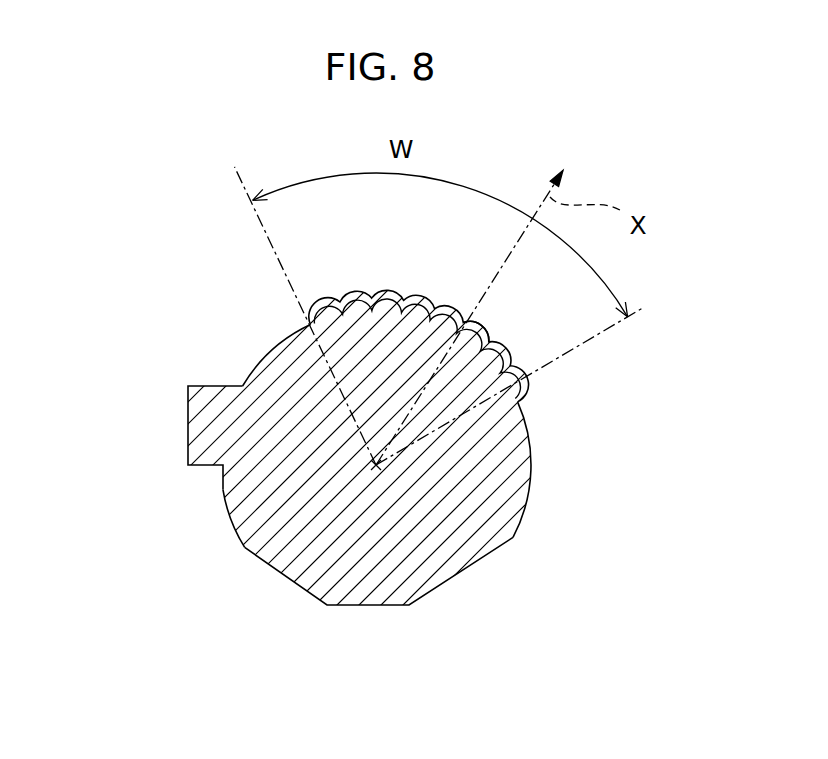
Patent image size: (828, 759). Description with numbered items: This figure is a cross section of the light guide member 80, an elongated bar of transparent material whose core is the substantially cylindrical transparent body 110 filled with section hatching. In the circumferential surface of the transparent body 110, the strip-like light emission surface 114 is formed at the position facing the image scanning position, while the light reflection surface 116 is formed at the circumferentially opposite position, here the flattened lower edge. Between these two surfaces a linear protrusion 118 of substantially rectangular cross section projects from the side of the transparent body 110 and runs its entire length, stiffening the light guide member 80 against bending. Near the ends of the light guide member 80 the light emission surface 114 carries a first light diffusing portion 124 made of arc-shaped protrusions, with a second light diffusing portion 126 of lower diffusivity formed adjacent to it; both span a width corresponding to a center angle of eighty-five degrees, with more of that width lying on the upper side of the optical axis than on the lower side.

The light guide member 80 is at (121, 156).
The transparent body 110 is at (530, 446).
The light emission surface 114 is at (488, 324).
The light reflection surface 116 is at (284, 580).
The linear protrusion 118 is at (218, 400).
The first light diffusing portion 124 is at (353, 289).
The second light diffusing portion 126 is at (380, 291).